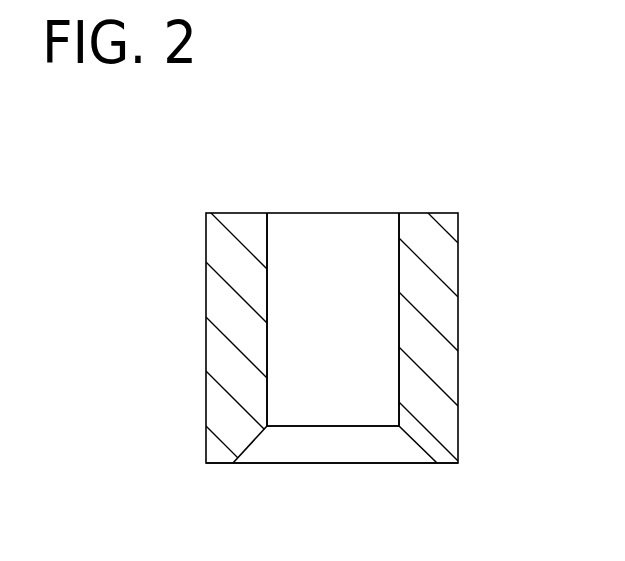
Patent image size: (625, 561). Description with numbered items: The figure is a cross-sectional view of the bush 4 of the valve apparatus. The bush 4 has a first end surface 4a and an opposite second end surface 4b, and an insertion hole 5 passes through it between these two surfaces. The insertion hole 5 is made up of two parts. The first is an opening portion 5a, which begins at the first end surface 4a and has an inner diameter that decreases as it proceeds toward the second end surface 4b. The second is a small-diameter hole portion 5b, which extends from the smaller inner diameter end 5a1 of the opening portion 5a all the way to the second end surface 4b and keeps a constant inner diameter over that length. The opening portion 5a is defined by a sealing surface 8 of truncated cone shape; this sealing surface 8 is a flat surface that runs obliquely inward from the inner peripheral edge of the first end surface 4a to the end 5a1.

The bush 4 is at (158, 180).
The first end surface 4a is at (440, 464).
The second end surface 4b is at (422, 212).
The insertion hole 5 is at (352, 280).
The opening portion 5a is at (323, 447).
The smaller inner diameter end 5a1 is at (370, 423).
The small-diameter hole portion 5b is at (268, 248).
The sealing surface 8 is at (258, 437).